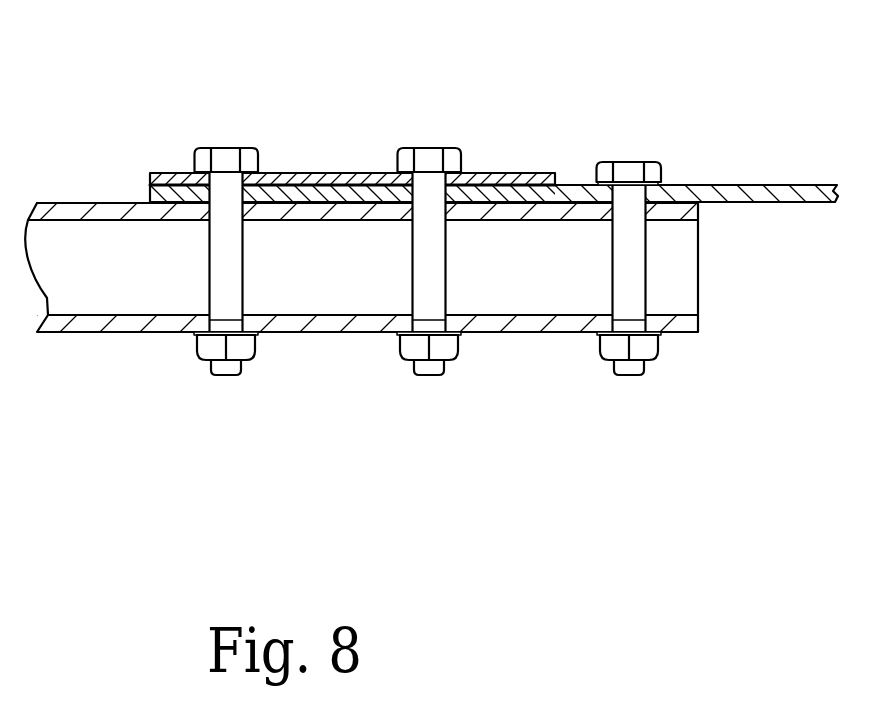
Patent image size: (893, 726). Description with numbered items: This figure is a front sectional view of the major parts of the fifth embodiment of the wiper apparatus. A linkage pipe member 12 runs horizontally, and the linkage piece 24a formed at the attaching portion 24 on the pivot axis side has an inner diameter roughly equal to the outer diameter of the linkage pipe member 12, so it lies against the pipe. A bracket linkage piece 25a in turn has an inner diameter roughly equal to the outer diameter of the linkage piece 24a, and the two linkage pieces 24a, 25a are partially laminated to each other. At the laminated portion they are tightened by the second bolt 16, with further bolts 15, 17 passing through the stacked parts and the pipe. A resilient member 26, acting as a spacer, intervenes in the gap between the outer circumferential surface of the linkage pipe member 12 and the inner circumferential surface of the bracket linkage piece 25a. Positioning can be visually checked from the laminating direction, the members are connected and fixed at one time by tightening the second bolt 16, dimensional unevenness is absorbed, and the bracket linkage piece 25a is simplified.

The linkage pipe member 12 is at (95, 323).
The bolt 15 is at (231, 163).
The second bolt 16 is at (429, 160).
The bolt 17 is at (628, 173).
The attaching portion 24 is at (758, 190).
The linkage piece 24a is at (508, 192).
The bracket linkage piece 25a is at (341, 180).
The resilient member 26 is at (168, 190).